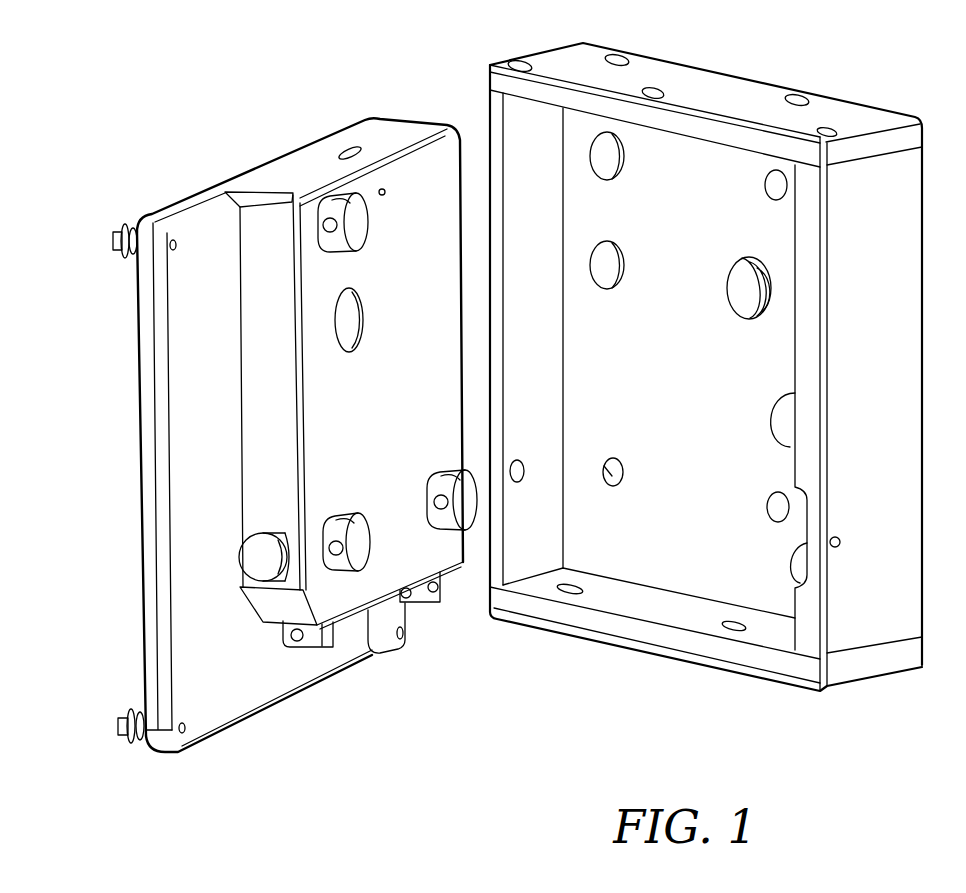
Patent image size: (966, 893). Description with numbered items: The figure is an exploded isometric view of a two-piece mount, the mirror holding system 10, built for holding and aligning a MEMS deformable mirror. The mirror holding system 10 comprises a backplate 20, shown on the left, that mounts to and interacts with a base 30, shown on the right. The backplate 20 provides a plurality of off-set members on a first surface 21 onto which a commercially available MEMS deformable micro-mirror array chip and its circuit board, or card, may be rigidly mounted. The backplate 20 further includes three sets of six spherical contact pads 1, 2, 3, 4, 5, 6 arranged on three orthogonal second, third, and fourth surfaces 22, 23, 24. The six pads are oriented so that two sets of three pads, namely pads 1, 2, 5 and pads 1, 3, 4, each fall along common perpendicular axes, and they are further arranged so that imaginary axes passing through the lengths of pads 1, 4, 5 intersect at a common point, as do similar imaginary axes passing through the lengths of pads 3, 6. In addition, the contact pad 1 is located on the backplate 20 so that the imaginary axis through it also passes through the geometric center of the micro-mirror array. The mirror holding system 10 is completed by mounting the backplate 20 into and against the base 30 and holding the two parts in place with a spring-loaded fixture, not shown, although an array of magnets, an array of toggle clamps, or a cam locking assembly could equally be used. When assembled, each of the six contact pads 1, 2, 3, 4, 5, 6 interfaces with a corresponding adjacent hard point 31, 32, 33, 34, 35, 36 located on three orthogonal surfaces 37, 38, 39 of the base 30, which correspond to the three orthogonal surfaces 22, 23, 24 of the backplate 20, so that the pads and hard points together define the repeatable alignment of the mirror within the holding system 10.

The mirror holding system 10 is at (375, 44).
The backplate 20 is at (373, 402).
The first surface 21 is at (136, 312).
The second surface 22 is at (421, 233).
The third surface 23 is at (368, 637).
The fourth surface 24 is at (266, 390).
The spherical contact pad 1 is at (363, 547).
The spherical contact pad 2 is at (366, 222).
The spherical contact pad 3 is at (471, 522).
The spherical contact pad 4 is at (252, 568).
The spherical contact pad 5 is at (313, 650).
The spherical contact pad 6 is at (433, 603).
The base 30 is at (663, 397).
The hard point 31 is at (773, 504).
The hard point 32 is at (773, 184).
The hard point 33 is at (613, 473).
The hard point 34 is at (800, 583).
The hard point 35 is at (726, 623).
The hard point 36 is at (570, 586).
The orthogonal surface 37 is at (696, 227).
The orthogonal surface 38 is at (788, 441).
The orthogonal surface 39 is at (661, 601).